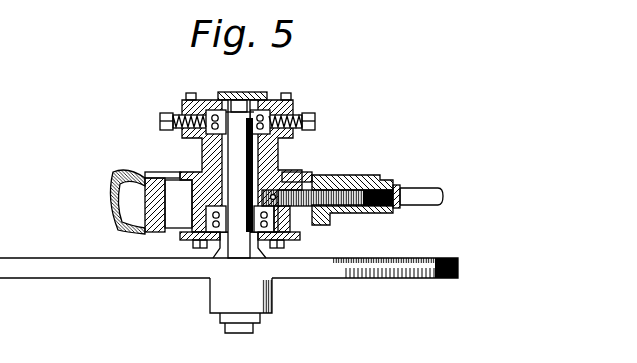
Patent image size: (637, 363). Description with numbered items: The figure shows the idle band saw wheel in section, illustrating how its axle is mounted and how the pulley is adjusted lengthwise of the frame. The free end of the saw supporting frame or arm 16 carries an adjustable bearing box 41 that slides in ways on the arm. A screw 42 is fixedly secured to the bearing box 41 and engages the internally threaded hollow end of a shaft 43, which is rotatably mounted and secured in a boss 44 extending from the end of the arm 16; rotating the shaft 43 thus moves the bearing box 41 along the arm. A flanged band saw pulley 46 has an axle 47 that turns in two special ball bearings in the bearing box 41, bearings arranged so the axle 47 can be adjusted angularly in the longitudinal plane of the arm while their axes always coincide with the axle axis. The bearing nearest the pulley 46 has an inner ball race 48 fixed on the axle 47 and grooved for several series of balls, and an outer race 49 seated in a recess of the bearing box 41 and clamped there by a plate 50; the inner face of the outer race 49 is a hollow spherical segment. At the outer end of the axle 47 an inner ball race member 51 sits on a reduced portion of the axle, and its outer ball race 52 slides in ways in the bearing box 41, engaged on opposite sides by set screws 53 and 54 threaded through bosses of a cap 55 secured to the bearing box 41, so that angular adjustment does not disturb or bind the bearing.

The saw supporting frame or arm 16 is at (127, 173).
The adjustable bearing box 41 is at (284, 168).
The screw 42 is at (300, 214).
The shaft 43 is at (413, 182).
The boss 44 is at (345, 175).
The flanged band saw pulley 46 is at (440, 279).
The axle 47 is at (217, 96).
The inner ball race 48 is at (260, 230).
The outer race 49 is at (272, 234).
The plate 50 is at (300, 242).
The inner ball race member 51 is at (252, 97).
The outer ball race 52 is at (270, 104).
The set screw 53 is at (315, 108).
The set screw 54 is at (162, 112).
The cap 55 is at (207, 97).